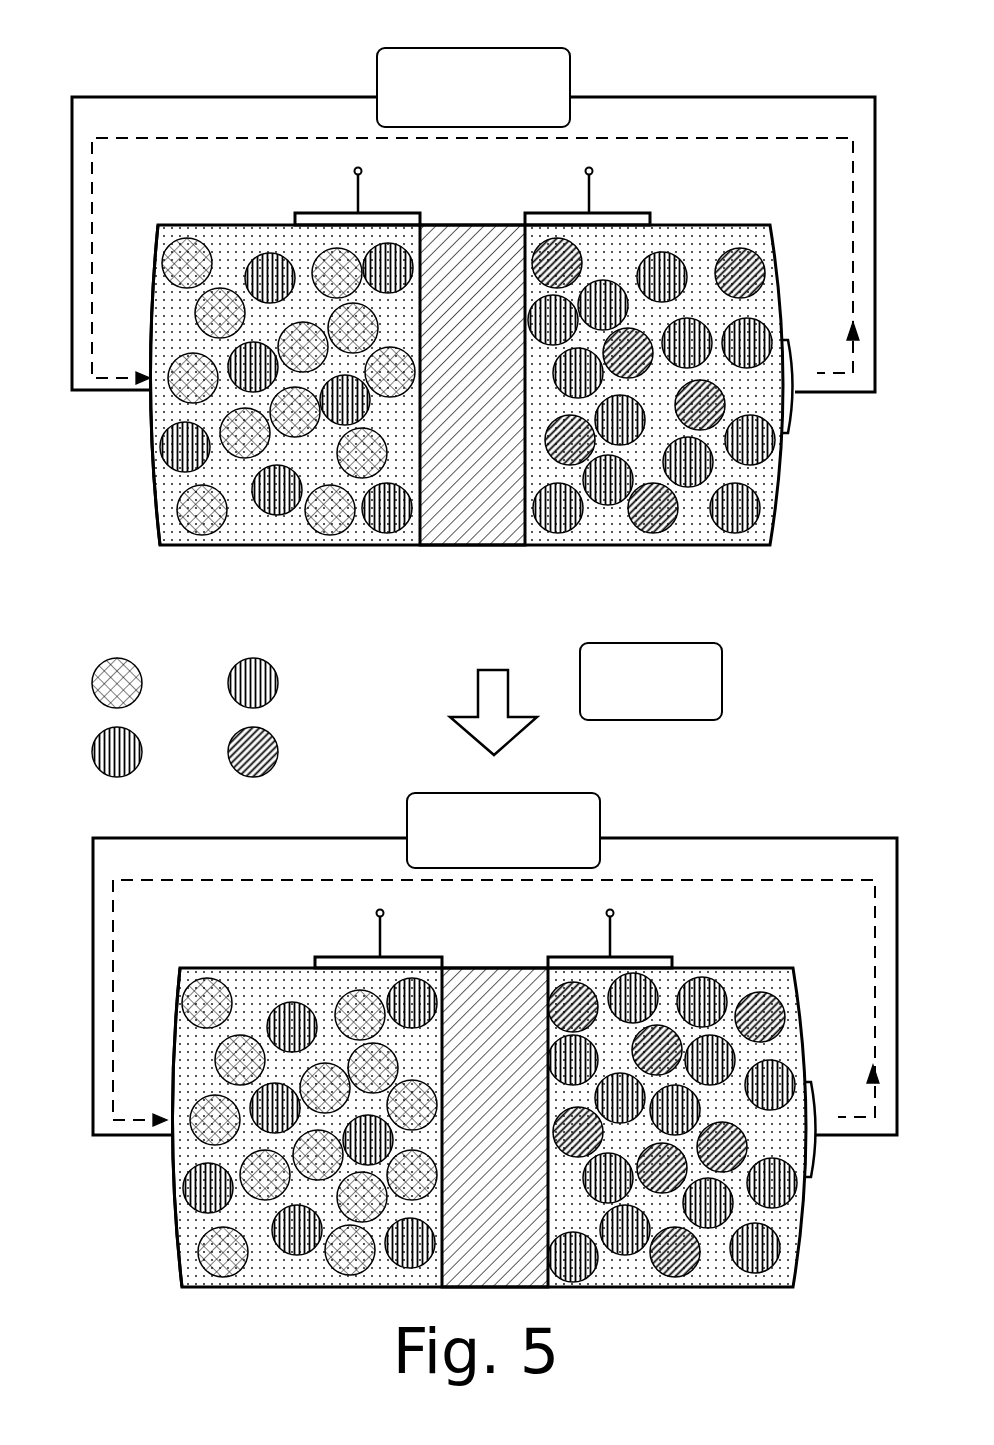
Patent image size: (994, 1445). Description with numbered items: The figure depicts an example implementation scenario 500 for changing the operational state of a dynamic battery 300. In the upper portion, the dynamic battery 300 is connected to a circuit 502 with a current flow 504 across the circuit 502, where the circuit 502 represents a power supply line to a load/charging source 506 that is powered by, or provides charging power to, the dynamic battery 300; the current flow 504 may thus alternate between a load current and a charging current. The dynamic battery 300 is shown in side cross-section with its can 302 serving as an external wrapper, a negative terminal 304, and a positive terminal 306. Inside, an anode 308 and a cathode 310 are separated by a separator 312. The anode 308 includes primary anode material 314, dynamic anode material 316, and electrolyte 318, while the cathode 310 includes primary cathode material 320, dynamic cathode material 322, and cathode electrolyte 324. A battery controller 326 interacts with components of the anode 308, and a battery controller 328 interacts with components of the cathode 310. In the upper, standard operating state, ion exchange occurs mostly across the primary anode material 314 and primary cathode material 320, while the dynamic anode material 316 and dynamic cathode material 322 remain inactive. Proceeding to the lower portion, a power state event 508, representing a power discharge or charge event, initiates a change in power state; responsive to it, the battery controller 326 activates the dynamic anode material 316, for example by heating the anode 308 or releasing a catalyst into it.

The dynamic battery 300 is at (735, 185).
The can 302 is at (185, 225).
The negative terminal 304 is at (150, 460).
The positive terminal 306 is at (786, 433).
The anode 308 is at (160, 555).
The cathode 310 is at (525, 555).
The separator 312 is at (470, 230).
The primary anode material 314 is at (112, 670).
The dynamic anode material 316 is at (112, 740).
The electrolyte 318 is at (290, 253).
The primary cathode material 320 is at (248, 680).
The dynamic cathode material 322 is at (248, 745).
The cathode electrolyte 324 is at (707, 258).
The battery controller 326 is at (340, 218).
The battery controller 328 is at (570, 218).
The implementation scenario 500 is at (126, 58).
The circuit 502 is at (800, 85).
The current flow 504 is at (215, 138).
The load/charging source 506 is at (488, 458).
The power state event 508 is at (507, 693).